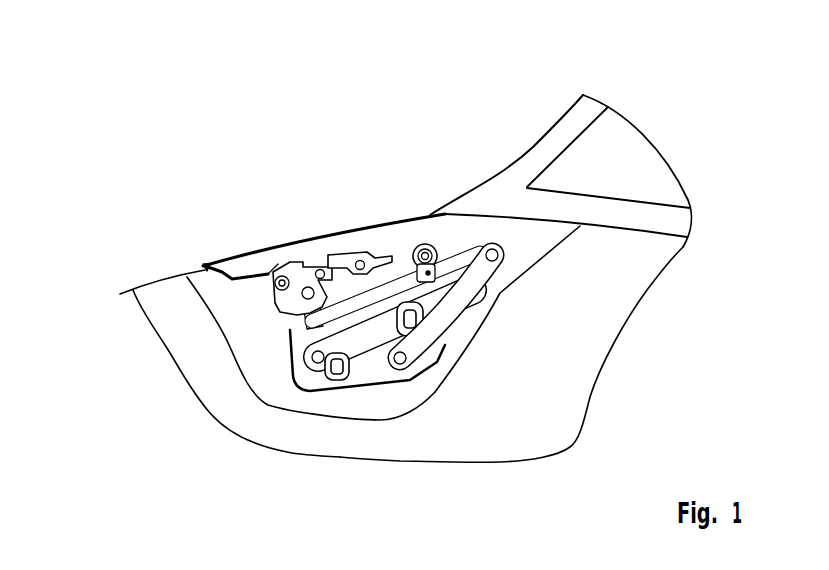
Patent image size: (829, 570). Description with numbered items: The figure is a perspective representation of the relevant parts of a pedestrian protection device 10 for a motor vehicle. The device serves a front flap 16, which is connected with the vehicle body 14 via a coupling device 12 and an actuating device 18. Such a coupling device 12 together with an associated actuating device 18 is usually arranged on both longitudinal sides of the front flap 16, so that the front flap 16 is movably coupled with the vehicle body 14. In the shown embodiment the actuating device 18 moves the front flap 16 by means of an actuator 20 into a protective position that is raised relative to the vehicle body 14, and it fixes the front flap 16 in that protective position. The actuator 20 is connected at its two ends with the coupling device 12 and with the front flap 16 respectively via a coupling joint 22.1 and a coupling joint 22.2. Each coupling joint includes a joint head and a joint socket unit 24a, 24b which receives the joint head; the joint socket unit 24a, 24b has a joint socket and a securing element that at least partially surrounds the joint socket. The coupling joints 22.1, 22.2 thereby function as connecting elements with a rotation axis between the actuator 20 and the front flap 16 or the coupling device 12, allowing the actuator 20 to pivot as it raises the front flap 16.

The pedestrian protection device 10 is at (270, 167).
The coupling device 12 is at (370, 363).
The vehicle body 14 is at (537, 146).
The front flap 16 is at (590, 288).
The actuating device 18 is at (290, 320).
The actuator 20 is at (372, 260).
The coupling joint 22.1 is at (307, 332).
The coupling joint 22.2 is at (424, 246).
The joint socket unit 24a is at (301, 343).
The joint socket unit 24b is at (440, 247).